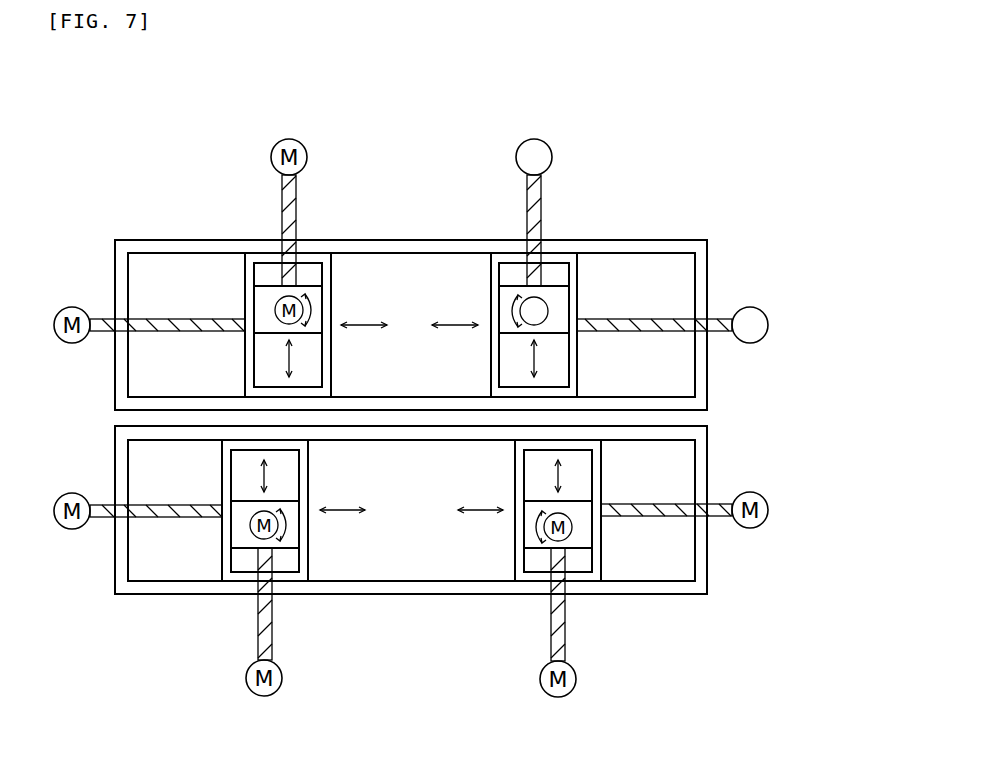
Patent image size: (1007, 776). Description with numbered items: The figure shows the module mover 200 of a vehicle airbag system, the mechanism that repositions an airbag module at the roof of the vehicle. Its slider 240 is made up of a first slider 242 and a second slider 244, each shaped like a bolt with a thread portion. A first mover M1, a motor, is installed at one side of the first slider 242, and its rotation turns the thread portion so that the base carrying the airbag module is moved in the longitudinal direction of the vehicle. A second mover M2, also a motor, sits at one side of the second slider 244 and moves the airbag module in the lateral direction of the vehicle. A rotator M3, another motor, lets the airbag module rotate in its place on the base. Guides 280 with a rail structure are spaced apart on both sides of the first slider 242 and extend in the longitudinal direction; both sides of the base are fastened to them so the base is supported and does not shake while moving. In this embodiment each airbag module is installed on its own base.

The module mover 200 is at (724, 233).
The slider 240 is at (648, 132).
The first slider 242 is at (624, 323).
The second slider 244 is at (538, 197).
The guides 280 is at (409, 247).
The first mover M1 is at (769, 324).
The second mover M2 is at (534, 139).
The rotator M3 is at (545, 321).